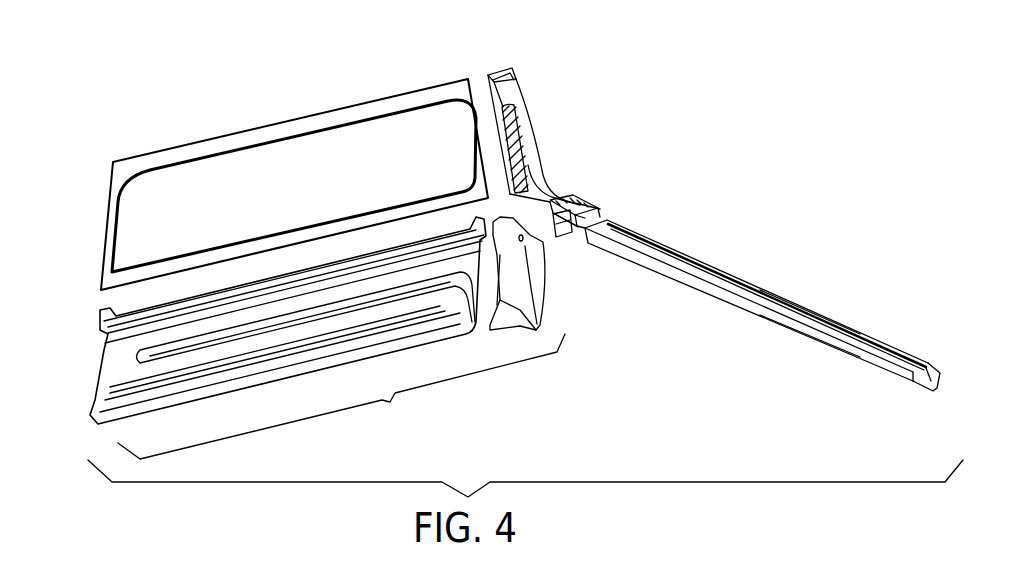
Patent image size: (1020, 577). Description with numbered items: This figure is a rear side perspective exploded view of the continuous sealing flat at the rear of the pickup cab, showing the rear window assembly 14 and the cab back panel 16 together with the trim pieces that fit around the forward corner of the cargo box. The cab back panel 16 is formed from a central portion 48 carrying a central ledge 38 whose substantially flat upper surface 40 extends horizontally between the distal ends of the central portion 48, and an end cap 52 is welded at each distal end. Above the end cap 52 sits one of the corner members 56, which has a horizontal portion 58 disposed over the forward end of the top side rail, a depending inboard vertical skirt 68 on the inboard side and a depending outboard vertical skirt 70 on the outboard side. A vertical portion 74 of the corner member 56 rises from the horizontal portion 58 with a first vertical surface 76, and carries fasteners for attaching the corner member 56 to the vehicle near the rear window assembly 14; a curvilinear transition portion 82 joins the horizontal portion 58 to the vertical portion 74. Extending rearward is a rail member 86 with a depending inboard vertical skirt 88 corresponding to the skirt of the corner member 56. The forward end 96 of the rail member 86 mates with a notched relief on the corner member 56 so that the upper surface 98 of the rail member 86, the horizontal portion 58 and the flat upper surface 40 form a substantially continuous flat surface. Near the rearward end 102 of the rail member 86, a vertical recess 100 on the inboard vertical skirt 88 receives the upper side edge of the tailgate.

The rear window assembly 14 is at (450, 88).
The cab back panel 16 is at (341, 396).
The central ledge 38 is at (133, 345).
The flat upper surface 40 is at (207, 307).
The central portion 48 is at (217, 380).
The end cap 52 is at (520, 280).
The corner member 56 is at (533, 143).
The horizontal portion 58 is at (595, 222).
The inboard vertical skirt 68 is at (557, 228).
The outboard vertical skirt 70 is at (598, 223).
The vertical portion 74 is at (515, 82).
The first vertical surface 76 is at (522, 110).
The curvilinear transition portion 82 is at (542, 172).
The rail member 86 is at (717, 277).
The inboard vertical skirt 88 is at (817, 338).
The forward end 96 is at (640, 243).
The upper surface 98 is at (808, 305).
The vertical recess 100 is at (920, 382).
The rearward end 102 is at (875, 347).